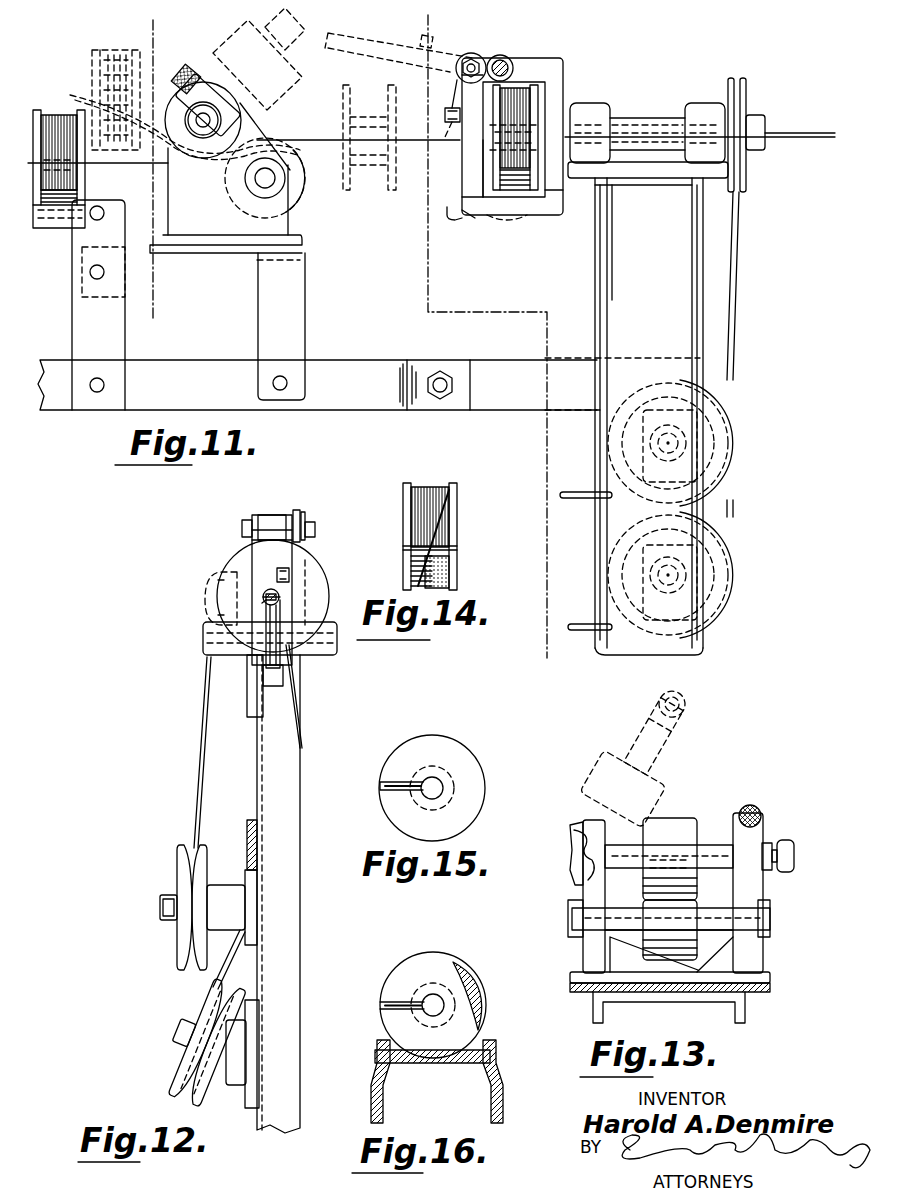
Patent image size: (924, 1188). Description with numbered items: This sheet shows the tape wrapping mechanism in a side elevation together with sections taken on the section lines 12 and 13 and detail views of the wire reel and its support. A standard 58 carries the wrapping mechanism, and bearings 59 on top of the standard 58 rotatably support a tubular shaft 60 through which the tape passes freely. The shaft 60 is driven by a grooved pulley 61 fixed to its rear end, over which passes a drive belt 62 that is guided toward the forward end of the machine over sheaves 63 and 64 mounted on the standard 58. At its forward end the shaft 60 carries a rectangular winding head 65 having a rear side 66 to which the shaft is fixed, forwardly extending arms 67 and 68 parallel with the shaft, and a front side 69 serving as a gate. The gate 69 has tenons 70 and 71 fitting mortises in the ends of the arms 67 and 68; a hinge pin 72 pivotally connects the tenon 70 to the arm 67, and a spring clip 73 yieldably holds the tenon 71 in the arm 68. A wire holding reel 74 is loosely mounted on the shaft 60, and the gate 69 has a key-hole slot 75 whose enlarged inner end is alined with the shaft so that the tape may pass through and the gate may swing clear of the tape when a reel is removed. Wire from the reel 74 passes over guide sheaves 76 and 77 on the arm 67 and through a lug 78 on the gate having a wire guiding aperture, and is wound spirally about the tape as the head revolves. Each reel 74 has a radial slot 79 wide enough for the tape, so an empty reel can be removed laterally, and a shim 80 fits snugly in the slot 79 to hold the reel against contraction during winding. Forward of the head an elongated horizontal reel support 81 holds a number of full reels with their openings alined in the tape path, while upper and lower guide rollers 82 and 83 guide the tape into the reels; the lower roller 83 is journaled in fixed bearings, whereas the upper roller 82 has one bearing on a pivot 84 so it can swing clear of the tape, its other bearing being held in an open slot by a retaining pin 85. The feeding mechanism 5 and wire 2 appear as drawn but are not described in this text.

In FIG. 11, the wire 2 is at (790, 134).
In FIG. 12, the wire 2 is at (262, 597).
In FIG. 13, the wire 2 is at (676, 897).
In FIG. 11, the feeding mechanism 5 is at (305, 147).
In FIG. 12, the feeding mechanism 5 is at (265, 590).
In FIG. 11, the standard 58 is at (646, 298).
In FIG. 12, the standard 58 is at (290, 893).
In FIG. 11, the bearings 59 is at (608, 108).
In FIG. 12, the bearings 59 is at (218, 585).
In FIG. 11, the tubular shaft 60 is at (645, 118).
In FIG. 11, the grooved pulley 61 is at (749, 95).
In FIG. 12, the grooved pulley 61 is at (330, 598).
In FIG. 11, the drive belt 62 is at (742, 270).
In FIG. 12, the drive belt 62 is at (197, 778).
In FIG. 11, the sheave 63 is at (700, 400).
In FIG. 12, the sheave 63 is at (178, 868).
In FIG. 11, the sheave 64 is at (705, 525).
In FIG. 12, the sheave 64 is at (180, 1083).
In FIG. 11, the winding head 65 is at (560, 62).
In FIG. 11, the rear side 66 is at (568, 188).
In FIG. 11, the arm 67 is at (546, 62).
In FIG. 12, the arm 67 is at (252, 518).
In FIG. 11, the arm 68 is at (532, 215).
In FIG. 12, the arm 68 is at (285, 677).
In FIG. 11, the front side 69 is at (465, 153).
In FIG. 12, the front side 69 is at (280, 597).
In FIG. 12, the tenon 70 is at (270, 516).
In FIG. 12, the tenon 71 is at (266, 678).
In FIG. 12, the hinge pin 72 is at (316, 528).
In FIG. 11, the spring clip 73 is at (452, 217).
In FIG. 12, the spring clip 73 is at (275, 685).
In FIG. 11, the wire holding reel 74 is at (42, 112).
In FIG. 12, the wire holding reel 74 is at (225, 602).
In FIG. 14, the wire holding reel 74 is at (456, 503).
In FIG. 15, the wire holding reel 74 is at (470, 763).
In FIG. 16, the wire holding reel 74 is at (460, 968).
In FIG. 12, the key-hole slot 75 is at (262, 603).
In FIG. 11, the guide sheave 76 is at (515, 48).
In FIG. 11, the guide sheave 77 is at (473, 55).
In FIG. 12, the guide sheave 77 is at (305, 515).
In FIG. 11, the lug 78 is at (445, 110).
In FIG. 12, the lug 78 is at (290, 575).
In FIG. 14, the radial slot 79 is at (459, 537).
In FIG. 15, the radial slot 79 is at (392, 795).
In FIG. 16, the radial slot 79 is at (381, 1005).
In FIG. 15, the shim 80 is at (380, 782).
In FIG. 16, the shim 80 is at (424, 1000).
In FIG. 11, the reel support 81 is at (50, 225).
In FIG. 16, the reel support 81 is at (445, 1067).
In FIG. 11, the upper guide roller 82 is at (240, 112).
In FIG. 13, the upper guide roller 82 is at (690, 817).
In FIG. 11, the lower guide roller 83 is at (290, 200).
In FIG. 13, the lower guide roller 83 is at (688, 938).
In FIG. 13, the pivot 84 is at (570, 832).
In FIG. 11, the retaining pin 85 is at (184, 68).
In FIG. 13, the retaining pin 85 is at (757, 811).
In FIG. 11, the section line 12 is at (444, 19).
In FIG. 11, the section line 13 is at (174, 21).